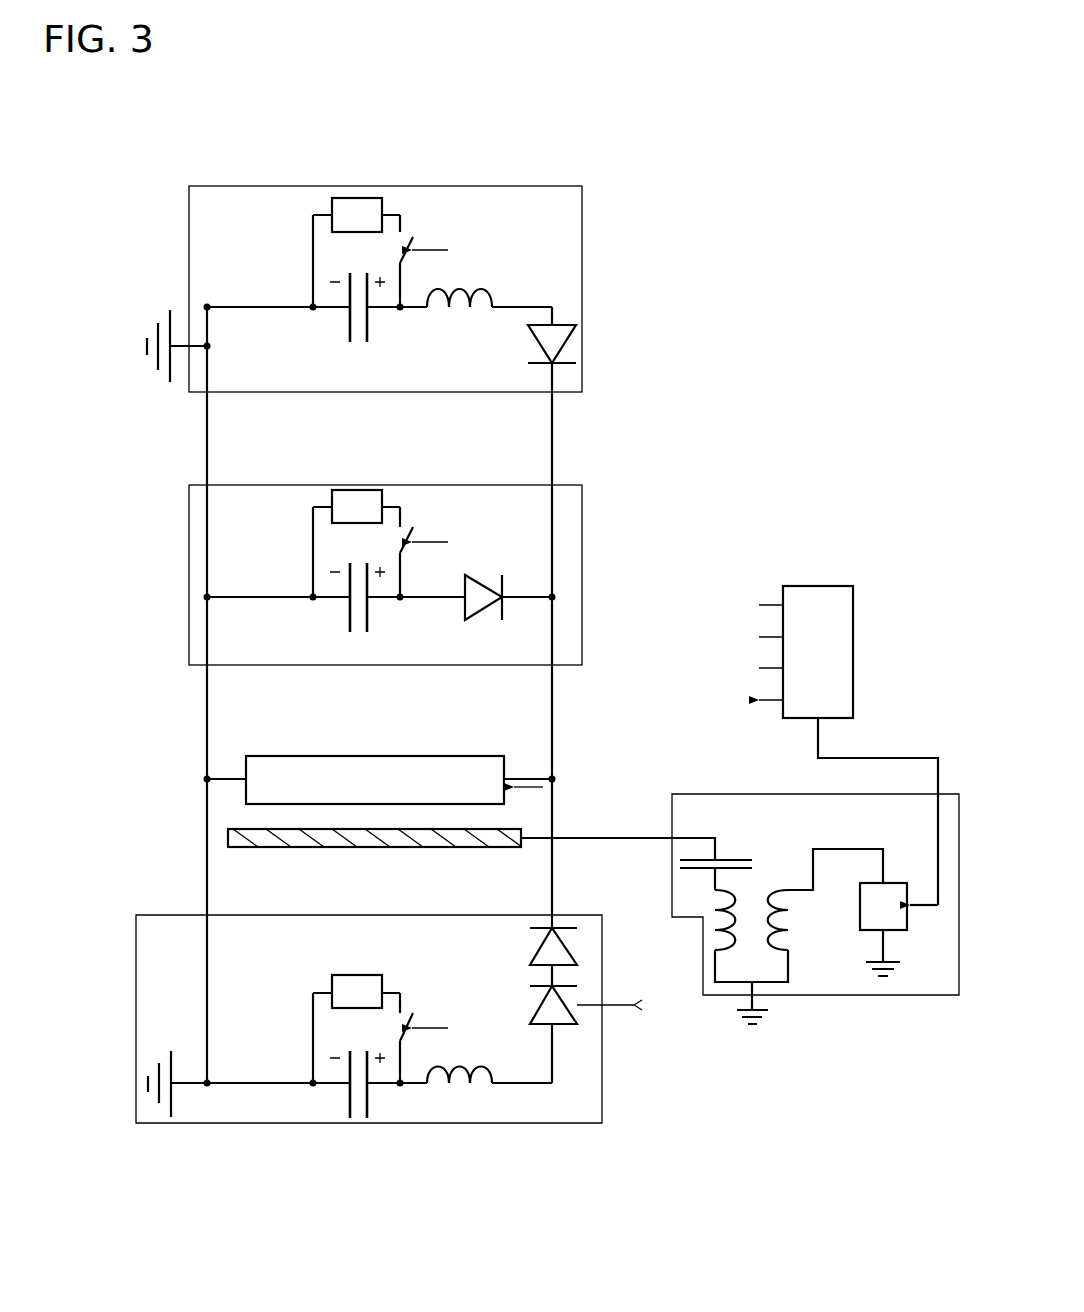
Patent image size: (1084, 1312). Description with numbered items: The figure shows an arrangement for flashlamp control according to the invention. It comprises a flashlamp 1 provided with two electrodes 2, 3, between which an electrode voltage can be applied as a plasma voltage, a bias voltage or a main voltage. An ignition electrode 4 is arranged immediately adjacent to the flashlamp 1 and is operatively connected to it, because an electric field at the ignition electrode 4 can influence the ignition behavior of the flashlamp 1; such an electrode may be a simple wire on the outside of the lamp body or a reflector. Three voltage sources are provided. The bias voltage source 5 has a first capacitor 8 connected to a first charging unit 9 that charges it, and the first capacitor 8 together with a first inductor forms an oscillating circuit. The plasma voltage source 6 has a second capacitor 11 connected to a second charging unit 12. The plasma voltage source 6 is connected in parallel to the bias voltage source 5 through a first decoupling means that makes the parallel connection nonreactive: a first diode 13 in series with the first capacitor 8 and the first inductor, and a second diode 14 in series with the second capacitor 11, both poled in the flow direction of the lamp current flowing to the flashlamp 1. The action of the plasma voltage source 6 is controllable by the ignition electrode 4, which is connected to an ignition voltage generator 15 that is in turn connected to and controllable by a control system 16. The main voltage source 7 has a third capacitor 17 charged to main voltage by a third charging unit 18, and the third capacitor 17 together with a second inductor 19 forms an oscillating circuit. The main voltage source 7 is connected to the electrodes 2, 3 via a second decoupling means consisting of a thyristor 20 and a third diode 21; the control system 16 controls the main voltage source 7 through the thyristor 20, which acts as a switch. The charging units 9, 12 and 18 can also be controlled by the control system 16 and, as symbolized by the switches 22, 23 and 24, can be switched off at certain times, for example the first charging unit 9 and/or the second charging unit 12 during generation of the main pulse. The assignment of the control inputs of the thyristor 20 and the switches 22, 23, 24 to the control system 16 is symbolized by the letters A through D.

The flashlamp 1 is at (320, 779).
The electrode 2 is at (525, 778).
The electrode 3 is at (243, 783).
The ignition electrode 4 is at (247, 838).
The bias voltage source 5 is at (582, 220).
The plasma voltage source 6 is at (189, 530).
The main voltage source 7 is at (602, 1097).
The first capacitor 8 is at (345, 330).
The first charging unit 9 is at (352, 210).
The second capacitor 11 is at (345, 618).
The second charging unit 12 is at (350, 507).
The first diode 13 is at (553, 342).
The second diode 14 is at (488, 598).
The ignition voltage generator 15 is at (842, 997).
The control system 16 is at (835, 648).
The third capacitor 17 is at (357, 1118).
The third charging unit 18 is at (352, 993).
The second inductor 19 is at (463, 1077).
The thyristor 20 is at (563, 1017).
The third diode 21 is at (557, 967).
The switch 22 is at (410, 237).
The switch 23 is at (410, 527).
The switch 24 is at (403, 1010).